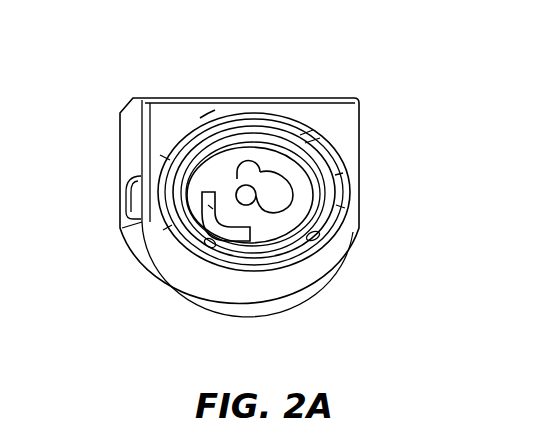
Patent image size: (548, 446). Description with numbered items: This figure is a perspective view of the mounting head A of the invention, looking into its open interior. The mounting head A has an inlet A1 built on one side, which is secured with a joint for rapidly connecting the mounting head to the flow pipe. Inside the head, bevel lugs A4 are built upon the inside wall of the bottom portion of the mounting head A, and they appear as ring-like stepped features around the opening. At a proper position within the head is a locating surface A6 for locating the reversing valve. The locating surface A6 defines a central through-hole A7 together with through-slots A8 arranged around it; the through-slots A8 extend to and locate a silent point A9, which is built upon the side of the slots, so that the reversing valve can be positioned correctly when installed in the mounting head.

The mounting head A is at (345, 108).
The inlet A1 is at (122, 190).
The bevel lugs A4 is at (305, 147).
The locating surface A6 is at (275, 220).
The through-hole A7 is at (249, 188).
The through-slots A8 is at (208, 122).
The silent point A9 is at (251, 168).